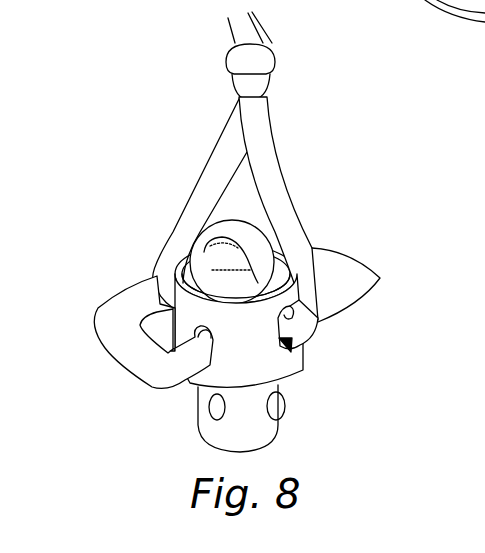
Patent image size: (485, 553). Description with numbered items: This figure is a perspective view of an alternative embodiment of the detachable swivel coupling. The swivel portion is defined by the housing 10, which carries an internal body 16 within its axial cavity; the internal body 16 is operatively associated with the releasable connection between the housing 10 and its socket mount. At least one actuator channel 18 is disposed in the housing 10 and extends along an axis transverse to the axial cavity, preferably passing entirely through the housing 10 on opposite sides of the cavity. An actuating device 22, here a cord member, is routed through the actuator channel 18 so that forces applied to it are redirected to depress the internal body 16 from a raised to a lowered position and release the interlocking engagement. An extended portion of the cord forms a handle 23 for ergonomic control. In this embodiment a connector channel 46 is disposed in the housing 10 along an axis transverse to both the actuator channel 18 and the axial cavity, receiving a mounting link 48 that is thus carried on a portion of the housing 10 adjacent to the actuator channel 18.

The housing 10 is at (258, 365).
The internal body 16 is at (217, 255).
The actuator channel 18 is at (287, 348).
The actuating device 22 is at (233, 230).
The handle 23 is at (250, 35).
The connector channel 46 is at (200, 332).
The mounting link 48 is at (110, 310).